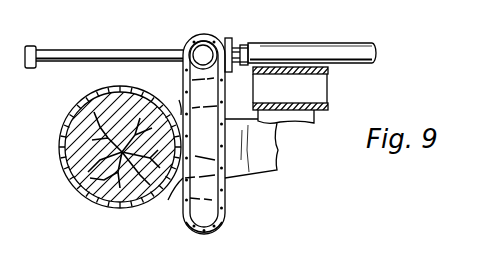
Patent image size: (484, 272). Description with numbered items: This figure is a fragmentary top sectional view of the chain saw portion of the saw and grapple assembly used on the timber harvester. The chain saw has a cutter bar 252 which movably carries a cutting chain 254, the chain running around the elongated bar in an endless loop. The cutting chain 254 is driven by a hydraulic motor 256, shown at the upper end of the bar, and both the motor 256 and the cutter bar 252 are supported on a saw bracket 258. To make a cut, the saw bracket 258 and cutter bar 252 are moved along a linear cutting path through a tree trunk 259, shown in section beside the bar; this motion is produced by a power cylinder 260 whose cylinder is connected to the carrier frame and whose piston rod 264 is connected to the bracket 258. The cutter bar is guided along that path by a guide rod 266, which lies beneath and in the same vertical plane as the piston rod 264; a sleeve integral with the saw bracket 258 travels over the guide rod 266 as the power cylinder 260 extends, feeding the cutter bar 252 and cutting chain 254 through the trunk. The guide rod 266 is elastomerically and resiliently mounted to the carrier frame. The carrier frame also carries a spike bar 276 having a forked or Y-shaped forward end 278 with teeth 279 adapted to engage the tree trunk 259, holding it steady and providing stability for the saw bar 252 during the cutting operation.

The cutter bar 252 is at (212, 208).
The cutting chain 254 is at (222, 228).
The hydraulic motor 256 is at (206, 50).
The saw bracket 258 is at (232, 45).
The tree trunk 259 is at (93, 198).
The power cylinder 260 is at (350, 47).
The piston rod 264 is at (244, 53).
The guide rod 266 is at (82, 52).
The spike bar 276 is at (256, 142).
The forked forward end 278 is at (168, 200).
The teeth 279 is at (179, 100).